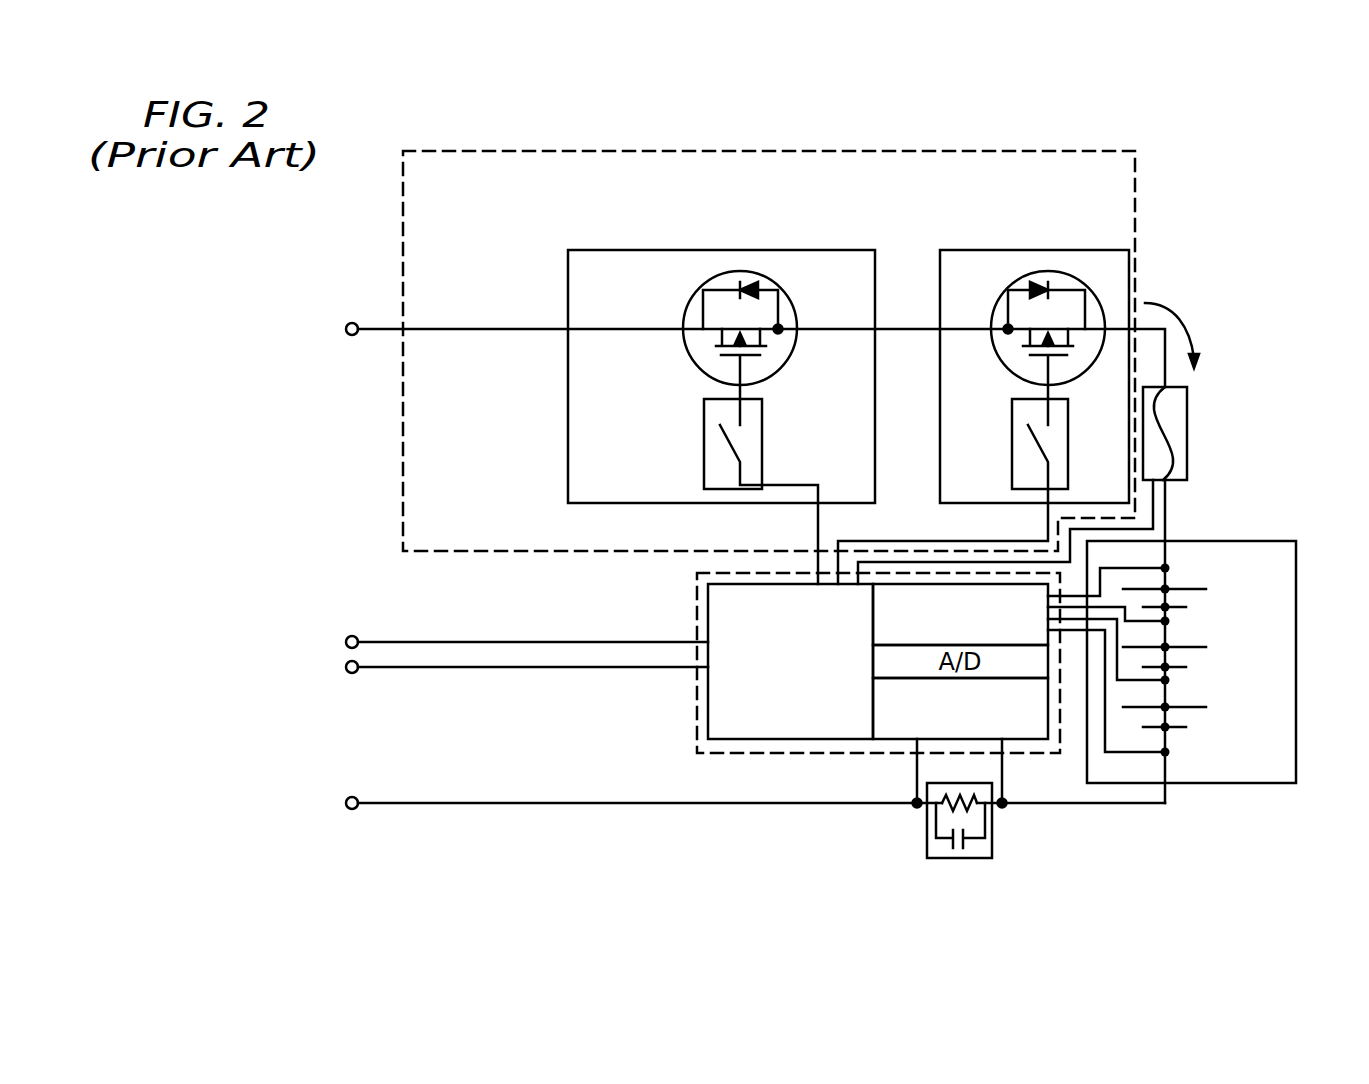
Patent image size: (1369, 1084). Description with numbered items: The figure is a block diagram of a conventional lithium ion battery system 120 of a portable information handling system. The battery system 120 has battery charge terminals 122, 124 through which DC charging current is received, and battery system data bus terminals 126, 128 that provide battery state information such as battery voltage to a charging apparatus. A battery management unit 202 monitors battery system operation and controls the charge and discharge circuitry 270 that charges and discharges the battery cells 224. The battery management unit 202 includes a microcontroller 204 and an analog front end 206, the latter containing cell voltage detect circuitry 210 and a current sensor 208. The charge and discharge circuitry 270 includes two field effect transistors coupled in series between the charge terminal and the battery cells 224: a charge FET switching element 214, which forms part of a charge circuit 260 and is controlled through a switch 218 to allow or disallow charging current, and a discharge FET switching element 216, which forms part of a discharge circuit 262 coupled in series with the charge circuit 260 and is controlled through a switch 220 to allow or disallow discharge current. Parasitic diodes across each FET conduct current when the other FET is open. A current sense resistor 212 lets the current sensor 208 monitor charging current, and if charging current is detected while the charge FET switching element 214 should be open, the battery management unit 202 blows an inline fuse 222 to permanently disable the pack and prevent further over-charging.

The battery system 120 is at (1262, 143).
The battery charge terminal 122 is at (350, 336).
The battery charge terminal 124 is at (350, 810).
The battery system data bus terminal 126 is at (350, 636).
The battery system data bus terminal 128 is at (350, 674).
The battery management unit 202 is at (697, 616).
The microcontroller 204 is at (753, 739).
The analog front end 206 is at (896, 740).
The current sensor 208 is at (960, 708).
The cell voltage detect circuitry 210 is at (960, 614).
The current sense resistor 212 is at (927, 827).
The charge FET switching element 214 is at (780, 292).
The discharge FET switching element 216 is at (1010, 290).
The switch 218 is at (704, 435).
The switch 220 is at (1012, 435).
The inline fuse 222 is at (1190, 440).
The battery cells 224 is at (1240, 783).
The charge circuit 260 is at (752, 250).
The discharge circuit 262 is at (1040, 250).
The charge and discharge circuitry 270 is at (1137, 200).